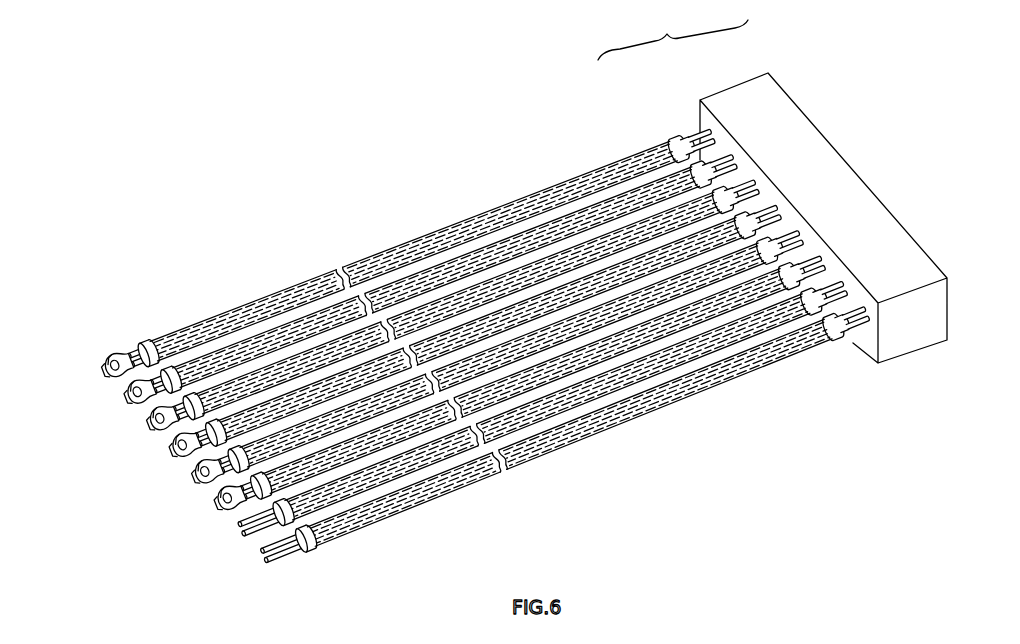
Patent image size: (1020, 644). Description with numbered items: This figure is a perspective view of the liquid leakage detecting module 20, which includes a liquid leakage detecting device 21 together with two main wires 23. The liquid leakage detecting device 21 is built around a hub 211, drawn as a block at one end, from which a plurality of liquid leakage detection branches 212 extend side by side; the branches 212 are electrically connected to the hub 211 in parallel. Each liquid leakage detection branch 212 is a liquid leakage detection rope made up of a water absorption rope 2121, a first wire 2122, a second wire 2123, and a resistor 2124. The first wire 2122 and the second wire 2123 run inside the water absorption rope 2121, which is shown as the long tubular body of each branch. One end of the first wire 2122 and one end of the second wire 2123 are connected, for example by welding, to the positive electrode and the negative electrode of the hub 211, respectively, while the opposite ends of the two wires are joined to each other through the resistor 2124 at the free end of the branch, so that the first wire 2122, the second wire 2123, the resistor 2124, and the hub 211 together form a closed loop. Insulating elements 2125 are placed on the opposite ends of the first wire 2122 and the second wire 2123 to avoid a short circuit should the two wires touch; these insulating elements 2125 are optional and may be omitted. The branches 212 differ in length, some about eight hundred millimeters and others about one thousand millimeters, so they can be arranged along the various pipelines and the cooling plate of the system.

The liquid leakage detecting module 20 is at (372, 150).
The liquid leakage detecting device 21 is at (673, 37).
The hub 211 is at (742, 100).
The liquid leakage detection branches 212 is at (484, 322).
The water absorption rope 2121 is at (313, 276).
The first wire 2122 is at (203, 328).
The second wire 2123 is at (258, 320).
The resistor 2124 is at (108, 372).
The insulating elements 2125 is at (706, 144).
The main wires 23 is at (560, 403).